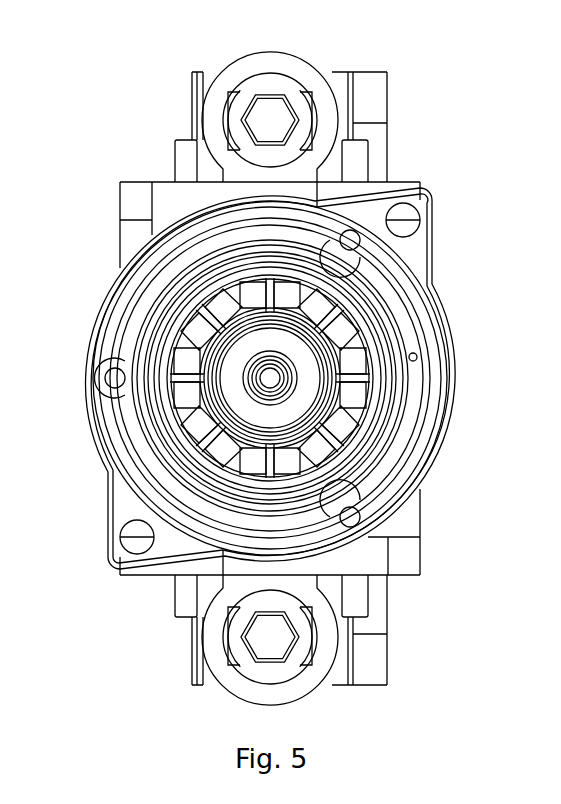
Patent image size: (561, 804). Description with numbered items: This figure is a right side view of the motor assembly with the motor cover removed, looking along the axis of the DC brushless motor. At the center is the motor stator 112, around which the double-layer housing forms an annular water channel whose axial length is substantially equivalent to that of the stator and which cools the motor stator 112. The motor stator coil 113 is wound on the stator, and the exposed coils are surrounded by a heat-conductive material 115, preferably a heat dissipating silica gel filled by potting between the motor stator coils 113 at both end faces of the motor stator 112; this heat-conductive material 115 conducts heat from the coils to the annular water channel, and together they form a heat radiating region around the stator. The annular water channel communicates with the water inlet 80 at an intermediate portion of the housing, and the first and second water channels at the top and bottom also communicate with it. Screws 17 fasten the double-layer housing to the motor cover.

The water inlet 80 is at (418, 354).
The motor stator 112 is at (365, 352).
The motor stator coil 113 is at (357, 423).
The heat-conductive material 115 is at (345, 372).
The screw 17 is at (130, 545).